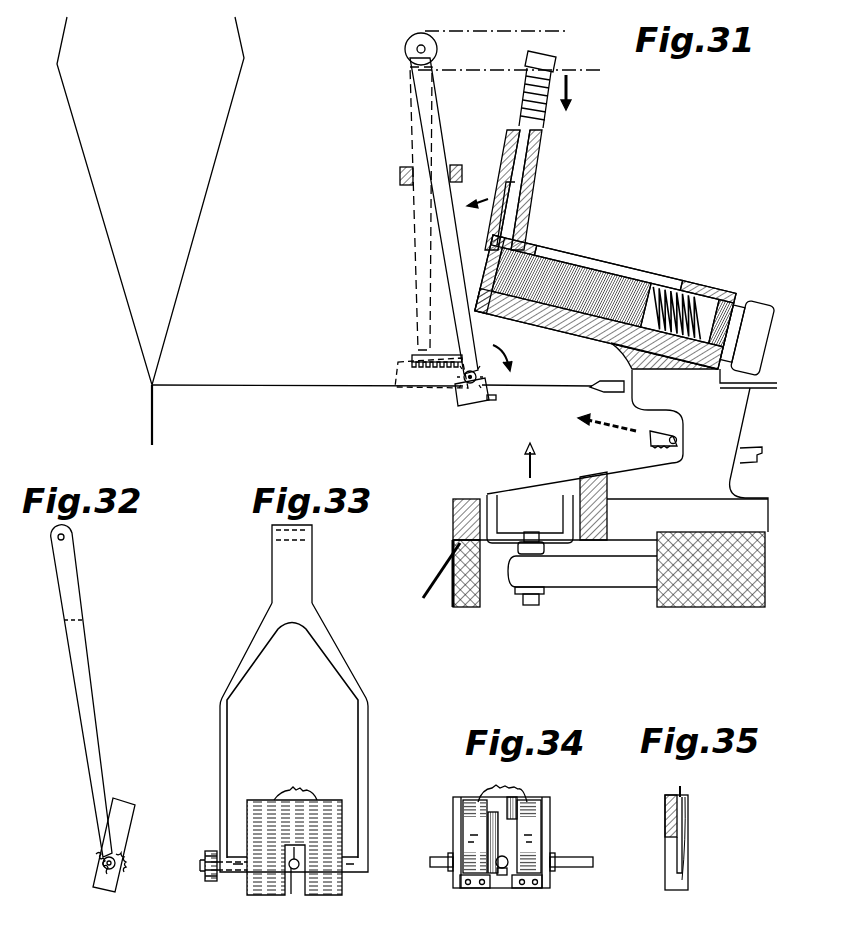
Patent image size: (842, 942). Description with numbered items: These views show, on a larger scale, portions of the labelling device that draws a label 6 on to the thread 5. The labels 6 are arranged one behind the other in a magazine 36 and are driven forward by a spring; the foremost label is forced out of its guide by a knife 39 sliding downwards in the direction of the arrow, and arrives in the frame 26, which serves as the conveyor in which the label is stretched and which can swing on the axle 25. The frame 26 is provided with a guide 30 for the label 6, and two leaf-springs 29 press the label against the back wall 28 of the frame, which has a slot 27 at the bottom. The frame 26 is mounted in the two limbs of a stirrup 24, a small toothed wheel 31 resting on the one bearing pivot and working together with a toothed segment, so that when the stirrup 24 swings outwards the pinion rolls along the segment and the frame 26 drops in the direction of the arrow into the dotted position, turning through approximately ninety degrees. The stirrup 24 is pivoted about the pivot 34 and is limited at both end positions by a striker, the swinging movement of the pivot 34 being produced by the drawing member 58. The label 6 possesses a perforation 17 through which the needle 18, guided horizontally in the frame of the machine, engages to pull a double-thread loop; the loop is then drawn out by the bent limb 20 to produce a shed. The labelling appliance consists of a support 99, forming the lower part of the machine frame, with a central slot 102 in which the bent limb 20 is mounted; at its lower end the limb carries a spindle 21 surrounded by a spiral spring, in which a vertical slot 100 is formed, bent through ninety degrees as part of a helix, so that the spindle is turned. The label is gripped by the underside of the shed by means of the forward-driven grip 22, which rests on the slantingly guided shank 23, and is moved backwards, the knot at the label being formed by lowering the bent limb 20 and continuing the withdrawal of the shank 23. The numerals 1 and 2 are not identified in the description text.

In FIG. 31, the hopper 1 is at (106, 228).
In FIG. 31, the discharge chute 2 is at (150, 418).
In FIG. 31, the thread 5 is at (361, 385).
In FIG. 32, the label 6 is at (128, 800).
In FIG. 33, the label 6 is at (296, 790).
In FIG. 34, the label 6 is at (504, 797).
In FIG. 35, the label 6 is at (680, 788).
In FIG. 33, the perforation 17 is at (297, 870).
In FIG. 31, the needle 18 is at (775, 383).
In FIG. 31, the bent limb 20 is at (494, 519).
In FIG. 31, the spindle 21 is at (535, 600).
In FIG. 31, the grip 22 is at (662, 433).
In FIG. 31, the shank 23 is at (756, 456).
In FIG. 31, the stirrup 24 is at (447, 256).
In FIG. 32, the stirrup 24 is at (86, 652).
In FIG. 33, the stirrup 24 is at (258, 636).
In FIG. 32, the axle 25 is at (115, 880).
In FIG. 33, the axle 25 is at (202, 867).
In FIG. 34, the axle 25 is at (440, 867).
In FIG. 32, the frame 26 is at (125, 823).
In FIG. 33, the frame 26 is at (249, 800).
In FIG. 34, the frame 26 is at (545, 800).
In FIG. 33, the slot 27 is at (286, 893).
In FIG. 34, the slot 27 is at (505, 882).
In FIG. 35, the slot 27 is at (667, 885).
In FIG. 35, the back wall 28 is at (667, 803).
In FIG. 34, the leaf-springs 29 is at (470, 817).
In FIG. 35, the leaf-springs 29 is at (686, 815).
In FIG. 35, the guide 30 is at (685, 797).
In FIG. 33, the toothed wheel 31 is at (210, 851).
In FIG. 31, the pivot 34 is at (410, 50).
In FIG. 31, the magazine 36 is at (740, 278).
In FIG. 31, the knife 39 is at (520, 99).
In FIG. 31, the drawing member 58 is at (522, 32).
In FIG. 31, the support 99 is at (766, 511).
In FIG. 31, the vertical slot 100 is at (437, 573).
In FIG. 31, the central slot 102 is at (555, 491).